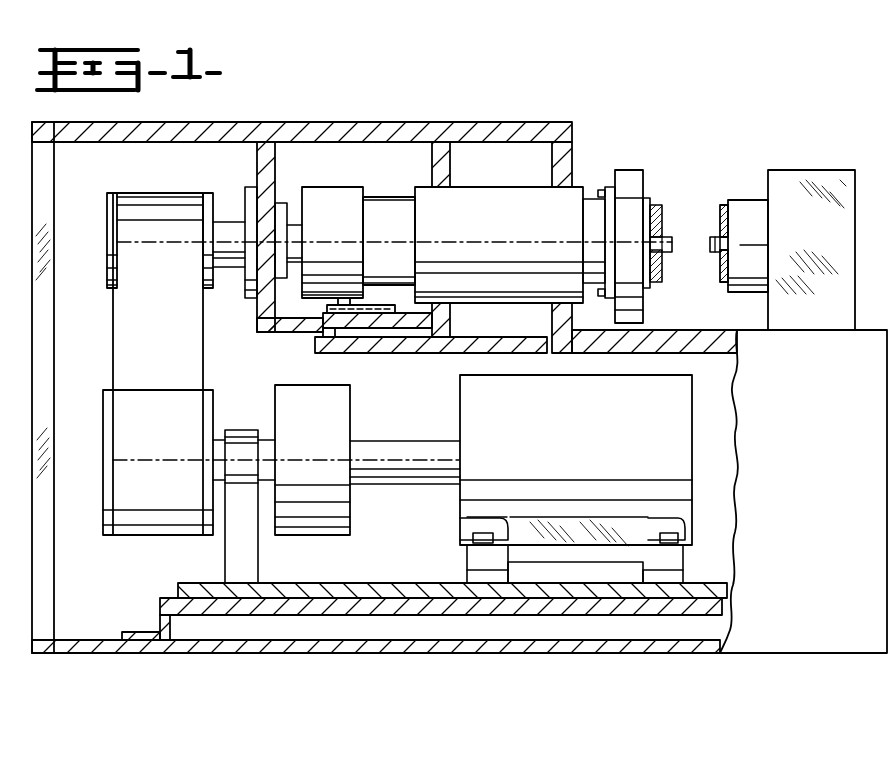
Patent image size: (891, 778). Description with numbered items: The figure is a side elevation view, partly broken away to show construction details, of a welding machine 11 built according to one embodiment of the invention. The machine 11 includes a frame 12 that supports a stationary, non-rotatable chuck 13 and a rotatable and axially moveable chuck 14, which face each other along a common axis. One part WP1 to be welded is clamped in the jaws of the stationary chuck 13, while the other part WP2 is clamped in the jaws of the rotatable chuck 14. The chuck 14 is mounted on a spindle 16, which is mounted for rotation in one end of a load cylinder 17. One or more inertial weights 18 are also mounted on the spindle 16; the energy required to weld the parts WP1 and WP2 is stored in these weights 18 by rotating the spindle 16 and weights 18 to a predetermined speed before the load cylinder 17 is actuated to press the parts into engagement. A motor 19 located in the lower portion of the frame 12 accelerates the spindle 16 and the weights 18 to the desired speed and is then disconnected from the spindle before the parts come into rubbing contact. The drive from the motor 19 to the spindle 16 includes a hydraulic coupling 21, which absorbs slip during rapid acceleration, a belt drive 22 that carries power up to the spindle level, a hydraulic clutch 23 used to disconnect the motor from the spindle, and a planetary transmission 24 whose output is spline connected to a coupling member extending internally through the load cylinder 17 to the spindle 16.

The welding machine 11 is at (765, 85).
The frame 12 is at (712, 343).
The stationary, non-rotatable chuck 13 is at (746, 198).
The rotatable and axially moveable chuck 14 is at (648, 199).
The spindle 16 is at (593, 193).
The load cylinder 17 is at (500, 165).
The inertial weights 18 is at (622, 170).
The motor 19 is at (461, 510).
The hydraulic coupling 21 is at (352, 507).
The belt drive 22 is at (120, 350).
The hydraulic clutch 23 is at (308, 193).
The planetary transmission 24 is at (370, 205).
The part to be welded WP1 is at (708, 243).
The part to be welded WP2 is at (672, 249).